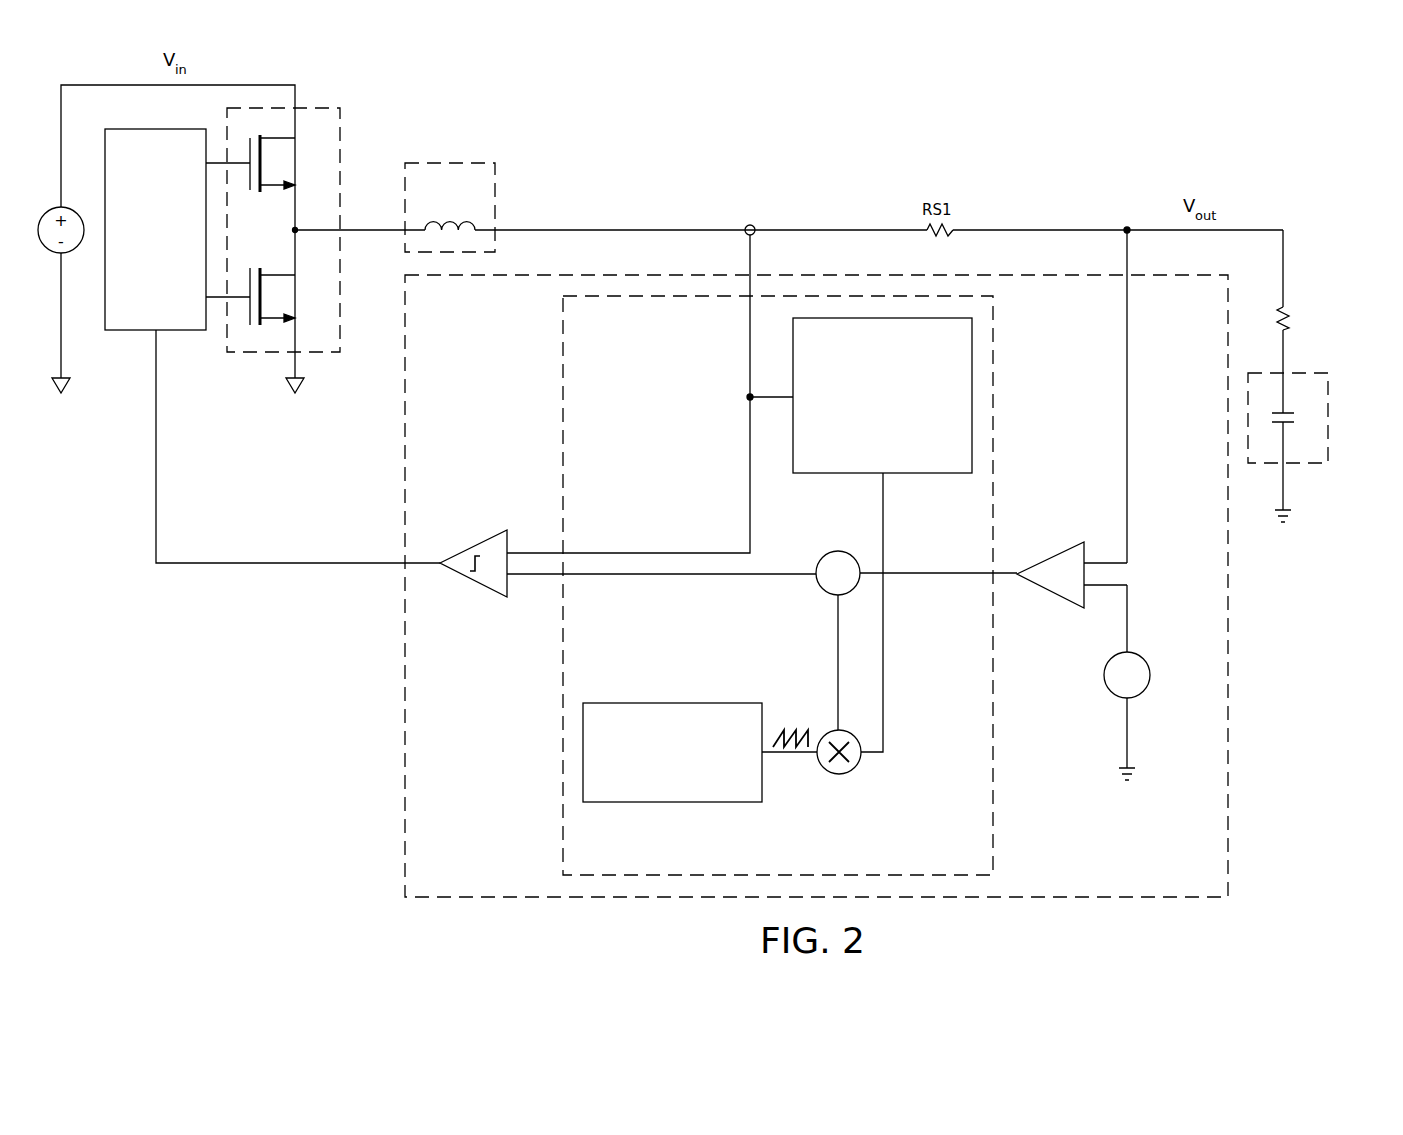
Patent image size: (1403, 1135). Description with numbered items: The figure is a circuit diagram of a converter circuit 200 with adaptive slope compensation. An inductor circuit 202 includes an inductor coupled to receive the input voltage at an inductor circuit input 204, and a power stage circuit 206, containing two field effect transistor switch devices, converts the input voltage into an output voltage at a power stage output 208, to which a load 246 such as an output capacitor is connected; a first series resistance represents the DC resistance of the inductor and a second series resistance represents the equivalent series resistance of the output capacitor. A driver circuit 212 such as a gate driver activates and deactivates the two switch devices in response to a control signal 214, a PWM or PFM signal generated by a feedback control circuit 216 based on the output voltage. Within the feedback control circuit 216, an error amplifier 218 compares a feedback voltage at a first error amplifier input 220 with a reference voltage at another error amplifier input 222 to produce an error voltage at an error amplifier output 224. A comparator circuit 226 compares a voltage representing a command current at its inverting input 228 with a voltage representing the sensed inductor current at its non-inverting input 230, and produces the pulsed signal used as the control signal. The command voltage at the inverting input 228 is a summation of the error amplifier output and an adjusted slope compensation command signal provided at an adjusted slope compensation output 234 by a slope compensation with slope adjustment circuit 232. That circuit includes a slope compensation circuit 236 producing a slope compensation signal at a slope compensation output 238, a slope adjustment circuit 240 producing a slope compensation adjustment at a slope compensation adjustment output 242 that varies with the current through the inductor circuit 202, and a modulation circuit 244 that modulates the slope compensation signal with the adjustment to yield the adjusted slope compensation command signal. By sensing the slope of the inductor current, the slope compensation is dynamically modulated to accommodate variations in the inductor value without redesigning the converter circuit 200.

The converter circuit 200 is at (985, 106).
The inductor circuit 202 is at (435, 162).
The inductor circuit input 204 is at (356, 228).
The power stage circuit 206 is at (308, 108).
The power stage output 208 is at (1288, 262).
The driver circuit 212 is at (139, 259).
The control signal 214 is at (155, 447).
The feedback control circuit 216 is at (1229, 612).
The error amplifier 218 is at (1048, 595).
The first error amplifier input 220 is at (1128, 403).
The error amplifier input 222 is at (1128, 618).
The error amplifier output 224 is at (922, 573).
The comparator circuit 226 is at (470, 580).
The inverting input 228 is at (693, 574).
The non-inverting input 230 is at (657, 552).
The slope compensation with slope adjustment circuit 232 is at (996, 733).
The adjusted slope compensation output 234 is at (837, 662).
The slope compensation circuit 236 is at (675, 802).
The slope compensation output 238 is at (790, 755).
The slope adjustment circuit 240 is at (866, 456).
The slope compensation adjustment output 242 is at (885, 673).
The modulation circuit 244 is at (850, 772).
The load 246 is at (1330, 432).